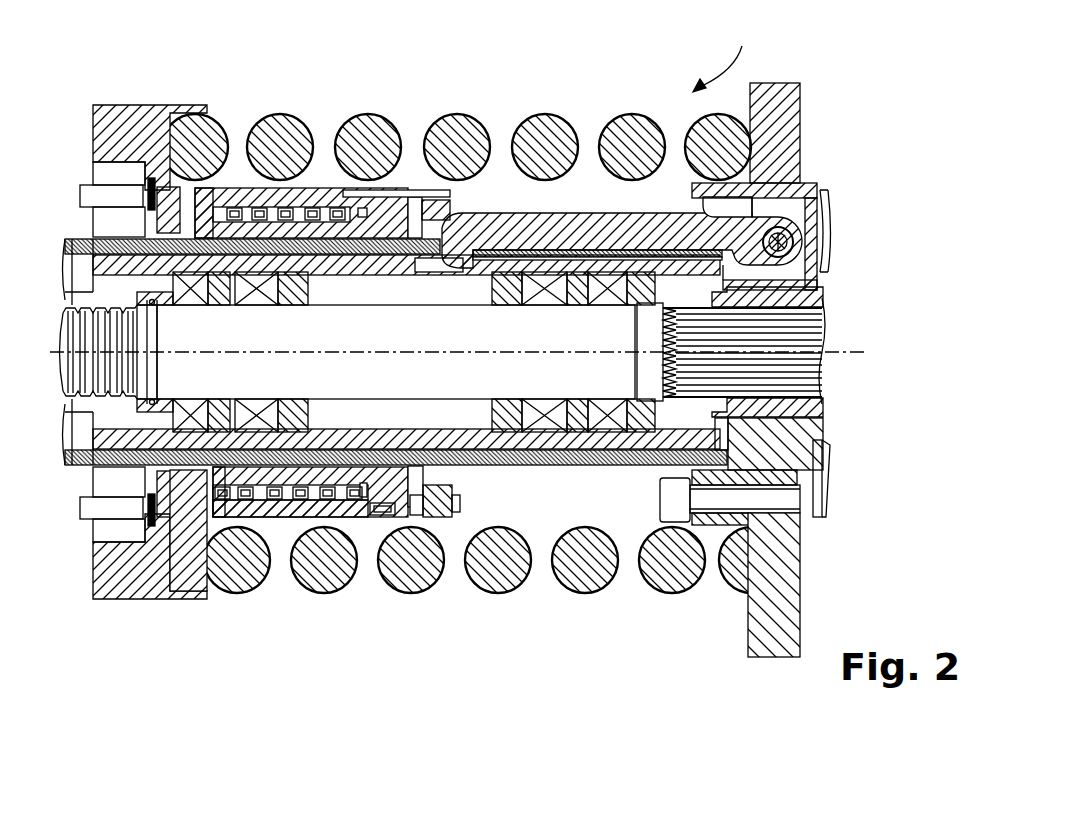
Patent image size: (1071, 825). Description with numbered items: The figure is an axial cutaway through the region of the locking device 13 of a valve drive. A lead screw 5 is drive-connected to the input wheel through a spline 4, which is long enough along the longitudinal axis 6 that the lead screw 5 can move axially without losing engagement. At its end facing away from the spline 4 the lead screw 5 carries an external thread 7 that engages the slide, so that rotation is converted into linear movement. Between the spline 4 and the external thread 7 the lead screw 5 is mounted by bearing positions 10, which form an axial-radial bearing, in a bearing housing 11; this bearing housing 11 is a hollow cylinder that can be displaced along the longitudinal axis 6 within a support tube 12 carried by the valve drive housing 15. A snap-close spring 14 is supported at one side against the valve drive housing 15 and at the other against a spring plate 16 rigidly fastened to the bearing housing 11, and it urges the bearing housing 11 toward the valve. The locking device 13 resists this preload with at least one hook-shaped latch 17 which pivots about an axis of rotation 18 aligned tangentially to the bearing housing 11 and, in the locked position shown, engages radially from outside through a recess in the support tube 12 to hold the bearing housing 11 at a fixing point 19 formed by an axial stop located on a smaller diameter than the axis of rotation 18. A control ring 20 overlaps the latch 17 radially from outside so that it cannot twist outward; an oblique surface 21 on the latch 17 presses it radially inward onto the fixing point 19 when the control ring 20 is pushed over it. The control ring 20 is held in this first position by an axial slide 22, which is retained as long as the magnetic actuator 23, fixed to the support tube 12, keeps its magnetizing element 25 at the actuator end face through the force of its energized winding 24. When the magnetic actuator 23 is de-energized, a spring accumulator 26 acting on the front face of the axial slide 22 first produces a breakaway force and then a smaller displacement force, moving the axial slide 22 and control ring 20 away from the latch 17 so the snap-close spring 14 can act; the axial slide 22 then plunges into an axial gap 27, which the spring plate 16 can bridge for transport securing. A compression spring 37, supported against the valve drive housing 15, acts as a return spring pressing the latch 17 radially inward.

The spline 4 is at (822, 380).
The lead screw 5 is at (392, 318).
The longitudinal axis 6 is at (852, 350).
The external thread 7 is at (64, 336).
The bearing positions 10 is at (188, 272).
The bearing housing 11 is at (516, 449).
The support tube 12 is at (617, 466).
The locking device 13 is at (725, 55).
The snap-close spring 14 is at (687, 568).
The valve drive housing 15 is at (796, 596).
The spring plate 16 is at (124, 583).
The hook-shaped latch 17 is at (658, 213).
The axis of rotation 18 is at (797, 240).
The fixing point 19 is at (484, 224).
The control ring 20 is at (412, 236).
The oblique surface 21 is at (452, 214).
The axial slide 22 is at (247, 500).
The magnetic actuator 23 is at (340, 518).
The winding 24 is at (313, 518).
The magnetizing element 25 is at (193, 505).
The spring accumulator 26 is at (373, 518).
The axial gap 27 is at (188, 505).
The compression spring 37 is at (742, 184).